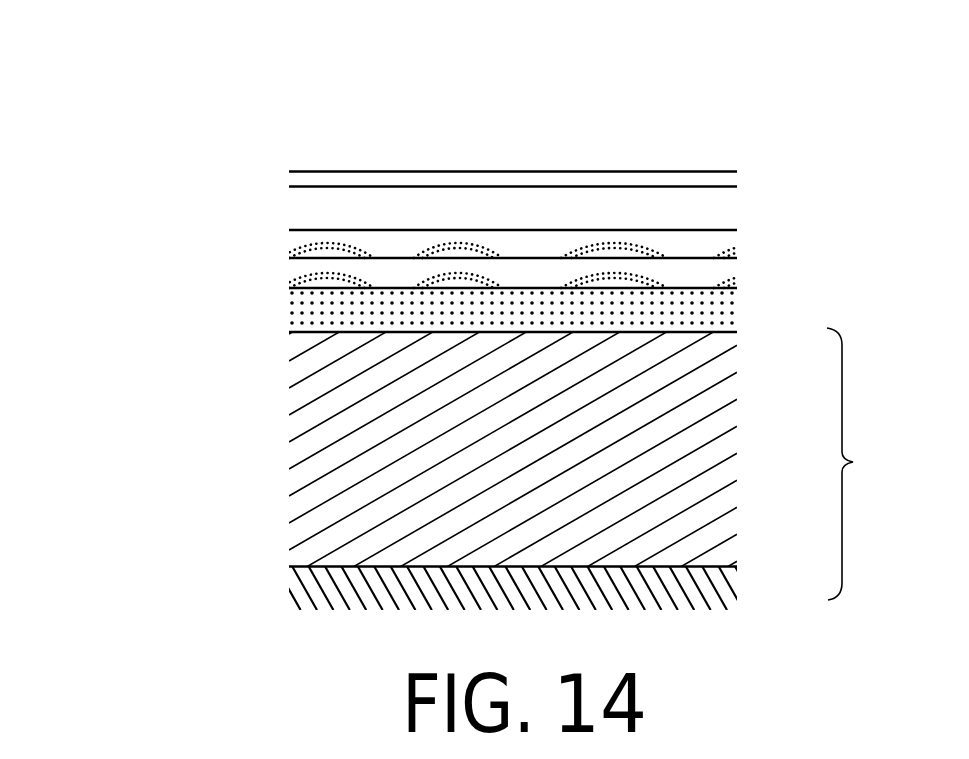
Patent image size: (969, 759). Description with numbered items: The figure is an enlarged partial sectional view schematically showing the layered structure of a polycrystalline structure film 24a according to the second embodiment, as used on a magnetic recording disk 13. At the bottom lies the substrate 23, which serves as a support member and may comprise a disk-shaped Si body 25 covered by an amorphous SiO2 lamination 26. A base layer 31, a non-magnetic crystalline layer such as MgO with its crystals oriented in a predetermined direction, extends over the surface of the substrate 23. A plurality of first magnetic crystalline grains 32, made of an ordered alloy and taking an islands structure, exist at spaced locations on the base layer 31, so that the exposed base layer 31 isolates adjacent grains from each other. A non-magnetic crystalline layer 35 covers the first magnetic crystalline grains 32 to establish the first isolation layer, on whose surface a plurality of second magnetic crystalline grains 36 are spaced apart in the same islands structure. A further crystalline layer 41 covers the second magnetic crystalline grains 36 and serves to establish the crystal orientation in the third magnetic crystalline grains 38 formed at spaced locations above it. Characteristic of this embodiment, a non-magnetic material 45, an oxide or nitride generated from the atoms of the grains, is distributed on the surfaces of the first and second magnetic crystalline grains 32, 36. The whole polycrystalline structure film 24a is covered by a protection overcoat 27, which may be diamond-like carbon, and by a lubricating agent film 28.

The magnetic recording disk 13 is at (604, 78).
The substrate 23 is at (878, 464).
The polycrystalline structure film 24a is at (153, 313).
The Si body 25 is at (697, 567).
The amorphous SiO2 lamination 26 is at (700, 332).
The protection overcoat 27 is at (735, 186).
The lubricating agent film 28 is at (705, 171).
The base layer 31 is at (296, 288).
The first magnetic crystalline grains 32 is at (427, 275).
The crystalline layer 35 is at (723, 260).
The second magnetic crystalline grains 36 is at (465, 238).
The third magnetic crystalline grains 38 is at (332, 208).
The crystalline layer 41 is at (313, 231).
The non-magnetic material 45 is at (440, 242).